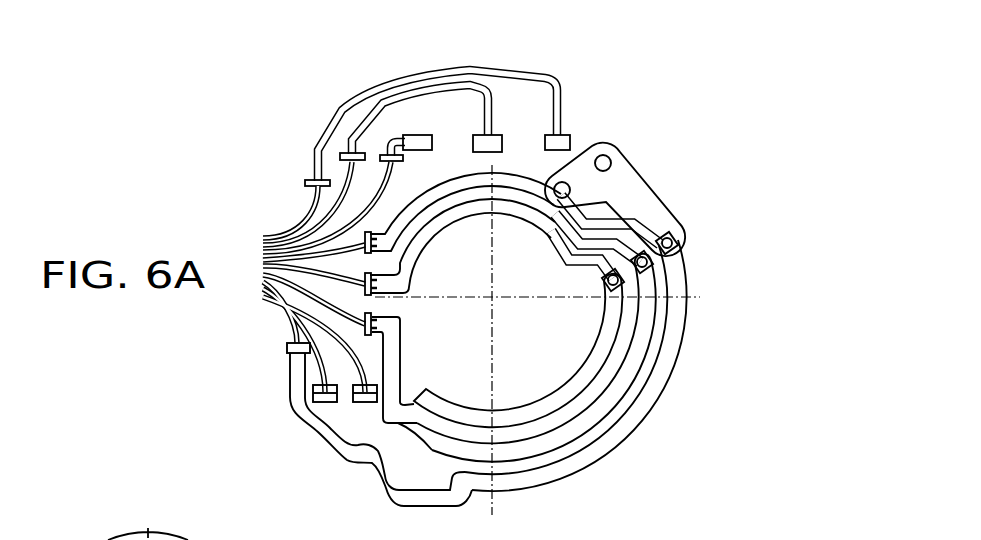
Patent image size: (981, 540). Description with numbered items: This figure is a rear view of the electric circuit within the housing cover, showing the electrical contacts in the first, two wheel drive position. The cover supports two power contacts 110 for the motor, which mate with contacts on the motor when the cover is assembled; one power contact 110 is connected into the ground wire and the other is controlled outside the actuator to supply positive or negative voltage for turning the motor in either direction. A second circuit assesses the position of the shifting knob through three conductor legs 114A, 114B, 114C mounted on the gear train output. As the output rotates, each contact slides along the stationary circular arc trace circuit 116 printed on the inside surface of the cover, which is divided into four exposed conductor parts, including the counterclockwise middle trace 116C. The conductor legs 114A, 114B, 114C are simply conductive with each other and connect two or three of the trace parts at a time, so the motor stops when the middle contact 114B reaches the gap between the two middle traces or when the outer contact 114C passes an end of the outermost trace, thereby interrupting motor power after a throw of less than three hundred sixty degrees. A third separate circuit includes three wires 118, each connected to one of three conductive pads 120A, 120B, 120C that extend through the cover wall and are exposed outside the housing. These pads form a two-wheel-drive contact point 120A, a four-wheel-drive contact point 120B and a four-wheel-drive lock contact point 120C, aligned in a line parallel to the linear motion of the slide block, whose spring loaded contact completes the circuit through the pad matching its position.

The power contacts 110 is at (325, 402).
The conductor leg 114A is at (612, 290).
The middle contact 114B is at (645, 268).
The outer contact 114C is at (655, 200).
The circular arc trace circuit 116 is at (688, 518).
The counterclockwise middle trace 116C is at (205, 539).
The wires 118 is at (360, 217).
The two-wheel-drive contact point 120A is at (558, 112).
The four-wheel-drive contact point 120B is at (514, 116).
The four-wheel-drive lock contact point 120C is at (420, 140).